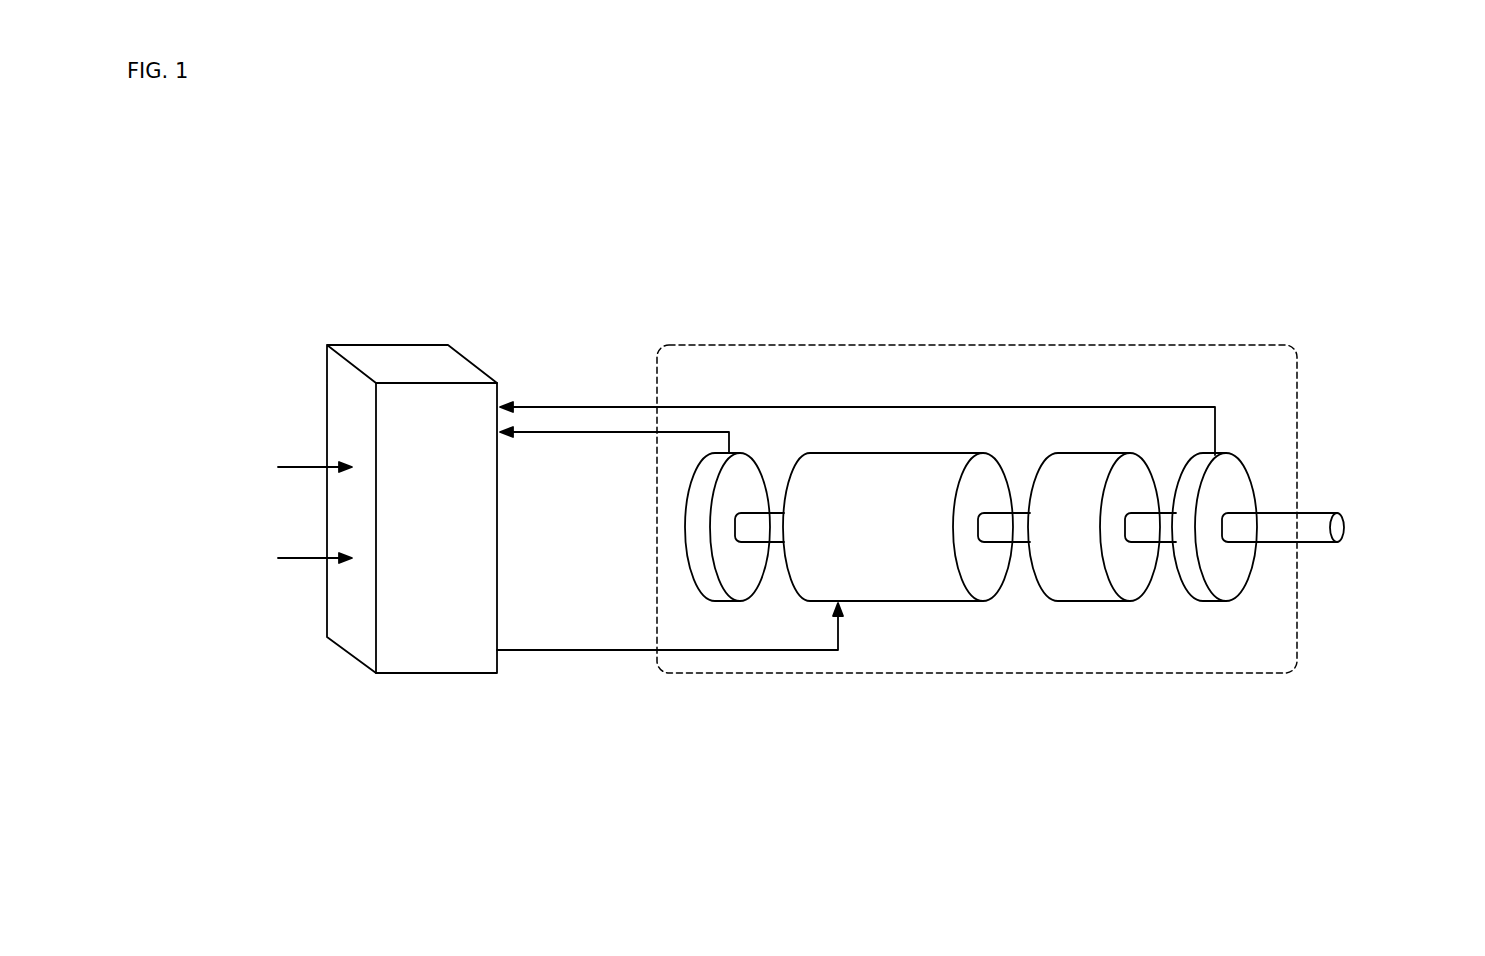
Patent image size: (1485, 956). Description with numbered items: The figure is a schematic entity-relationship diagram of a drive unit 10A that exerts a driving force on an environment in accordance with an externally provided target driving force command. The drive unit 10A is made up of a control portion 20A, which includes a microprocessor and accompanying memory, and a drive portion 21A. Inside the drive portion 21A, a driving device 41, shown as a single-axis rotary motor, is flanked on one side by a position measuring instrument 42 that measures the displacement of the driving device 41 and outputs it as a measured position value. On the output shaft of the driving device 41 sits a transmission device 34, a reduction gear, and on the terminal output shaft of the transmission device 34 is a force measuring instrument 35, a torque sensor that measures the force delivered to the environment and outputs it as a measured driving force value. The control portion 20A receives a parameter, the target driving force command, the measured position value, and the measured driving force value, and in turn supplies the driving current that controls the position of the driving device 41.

The drive unit 10A is at (264, 260).
The control portion 20A is at (383, 357).
The drive portion 21A is at (1157, 345).
The position measuring instrument 42 is at (747, 470).
The driving device 41 is at (990, 463).
The transmission device 34 is at (1140, 463).
The force measuring instrument 35 is at (1235, 463).